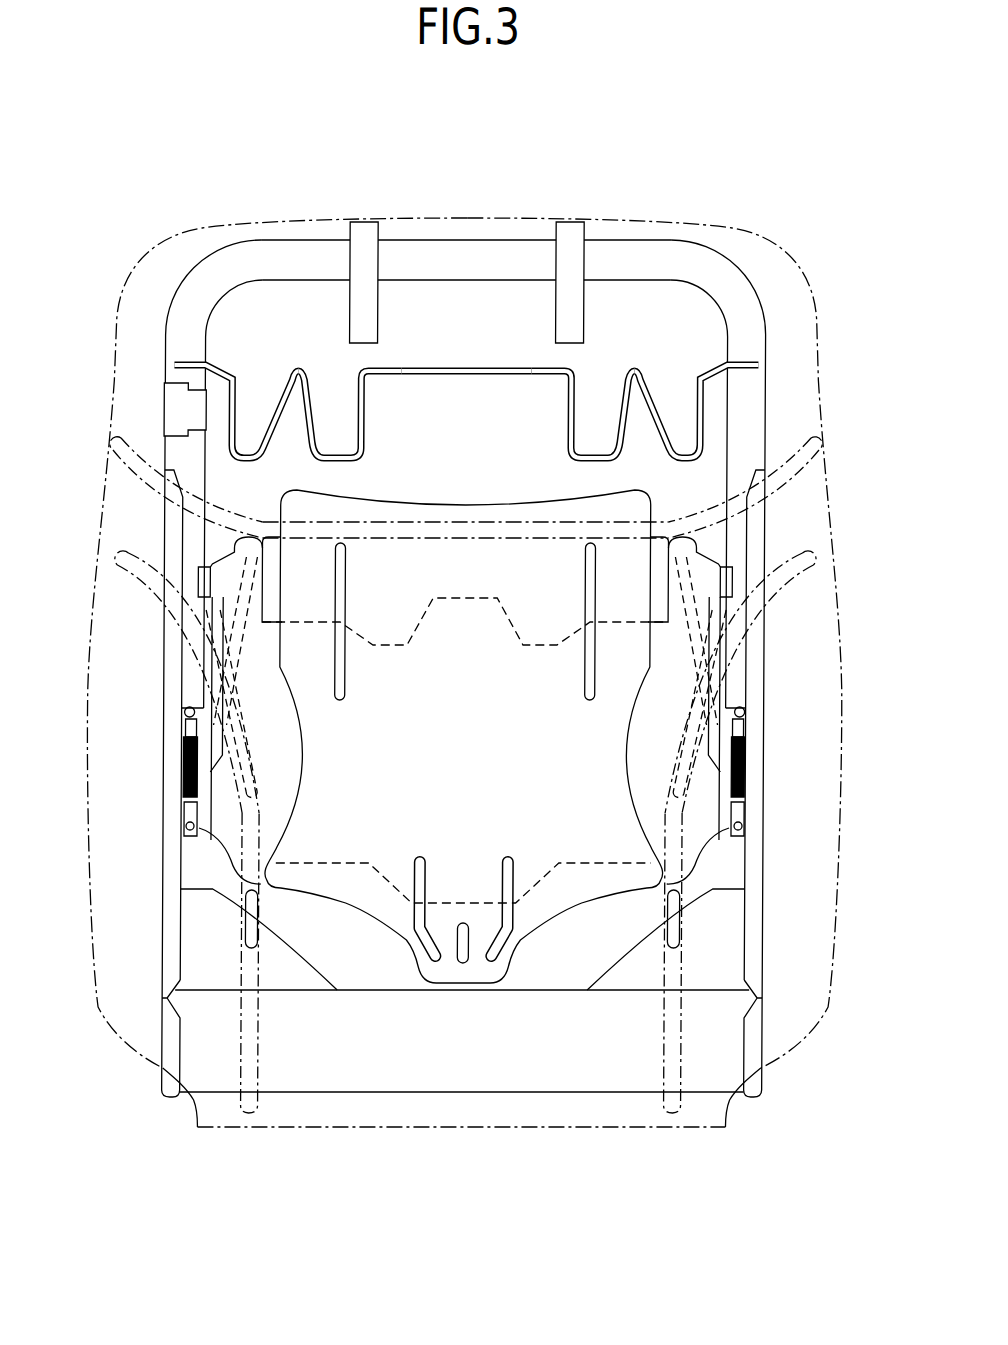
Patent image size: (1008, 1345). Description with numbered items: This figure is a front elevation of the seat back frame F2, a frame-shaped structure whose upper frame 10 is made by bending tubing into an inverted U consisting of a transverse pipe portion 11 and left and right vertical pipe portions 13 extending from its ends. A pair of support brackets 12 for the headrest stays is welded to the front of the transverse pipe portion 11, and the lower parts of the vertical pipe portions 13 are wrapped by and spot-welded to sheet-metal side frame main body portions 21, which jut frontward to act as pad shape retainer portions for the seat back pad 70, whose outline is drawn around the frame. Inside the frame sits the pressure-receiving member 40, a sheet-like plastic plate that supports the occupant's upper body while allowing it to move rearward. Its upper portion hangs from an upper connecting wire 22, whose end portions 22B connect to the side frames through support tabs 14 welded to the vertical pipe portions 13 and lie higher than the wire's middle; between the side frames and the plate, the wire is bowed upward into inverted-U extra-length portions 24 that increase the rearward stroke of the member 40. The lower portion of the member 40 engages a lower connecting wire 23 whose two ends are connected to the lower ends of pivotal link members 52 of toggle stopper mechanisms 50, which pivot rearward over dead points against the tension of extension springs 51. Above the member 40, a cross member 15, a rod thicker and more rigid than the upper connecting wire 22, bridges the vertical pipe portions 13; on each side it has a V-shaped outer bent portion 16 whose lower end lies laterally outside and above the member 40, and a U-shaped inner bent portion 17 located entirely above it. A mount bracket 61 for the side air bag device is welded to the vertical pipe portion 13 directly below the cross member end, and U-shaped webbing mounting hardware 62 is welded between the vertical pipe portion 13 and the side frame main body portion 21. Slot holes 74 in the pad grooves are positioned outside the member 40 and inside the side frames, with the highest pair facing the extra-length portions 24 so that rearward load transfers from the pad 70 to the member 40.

The upper frame 10 is at (724, 258).
The transverse pipe portion 11 is at (480, 250).
The support bracket 12 is at (360, 233).
The vertical pipe portion 13 is at (178, 460).
The support tab 14 is at (197, 580).
The cross member 15 is at (483, 382).
The outer bent portion 16 is at (245, 452).
The inner bent portion 17 is at (337, 452).
The side frame main body portion 21 is at (165, 857).
The upper connecting wire 22 is at (465, 604).
The end portion of the upper connecting wire 22B is at (207, 537).
The lower connecting wire 23 is at (463, 896).
The extra-length portion 24 is at (250, 535).
The pressure-receiving member 40 is at (416, 502).
The toggle stopper mechanism 50 is at (208, 745).
The extension spring 51 is at (200, 777).
The pivotal link member 52 is at (200, 830).
The mount bracket 61 is at (180, 403).
The webbing mounting hardware 62 is at (240, 646).
The seat back pad 70 is at (430, 217).
The slot hole 74 is at (185, 660).
The seat back frame F2 is at (684, 166).